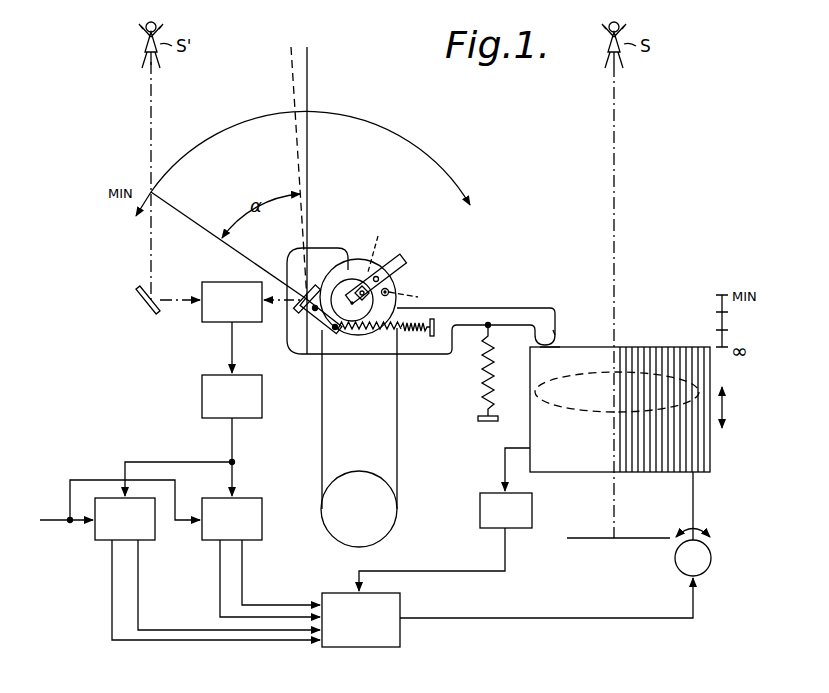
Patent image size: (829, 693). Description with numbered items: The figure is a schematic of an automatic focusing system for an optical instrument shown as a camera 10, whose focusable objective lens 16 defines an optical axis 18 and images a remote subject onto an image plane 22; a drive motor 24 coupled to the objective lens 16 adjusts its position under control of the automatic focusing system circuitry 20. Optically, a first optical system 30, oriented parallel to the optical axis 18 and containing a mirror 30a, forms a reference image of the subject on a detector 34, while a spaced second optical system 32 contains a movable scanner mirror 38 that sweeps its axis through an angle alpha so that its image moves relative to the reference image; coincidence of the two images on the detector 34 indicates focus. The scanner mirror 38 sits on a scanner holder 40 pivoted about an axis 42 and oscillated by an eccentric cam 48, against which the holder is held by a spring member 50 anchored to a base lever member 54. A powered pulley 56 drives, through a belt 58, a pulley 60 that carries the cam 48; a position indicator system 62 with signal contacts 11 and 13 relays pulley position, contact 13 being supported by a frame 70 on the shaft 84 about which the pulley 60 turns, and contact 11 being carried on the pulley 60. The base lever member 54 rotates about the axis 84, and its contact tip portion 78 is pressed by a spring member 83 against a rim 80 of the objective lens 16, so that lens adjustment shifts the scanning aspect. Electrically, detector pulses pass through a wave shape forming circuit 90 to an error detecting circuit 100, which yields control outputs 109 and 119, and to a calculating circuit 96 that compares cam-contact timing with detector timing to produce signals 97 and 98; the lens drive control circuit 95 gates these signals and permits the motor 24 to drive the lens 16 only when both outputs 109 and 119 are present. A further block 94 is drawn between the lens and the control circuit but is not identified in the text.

The camera 10 is at (532, 266).
The signal contact 11 is at (390, 291).
The signal contact 13 is at (381, 241).
The objective lens 16 is at (634, 345).
The optical axis 18 is at (617, 135).
The automatic focusing system circuitry 20 is at (185, 397).
The image plane 22 is at (605, 542).
The drive motor 24 is at (710, 558).
The first optical system 30 is at (148, 134).
The mirror 30a is at (140, 305).
The second optical system 32 is at (310, 95).
The detector 34 is at (232, 302).
The movable scanner mirror 38 is at (297, 310).
The scanner holder 40 is at (340, 340).
The pivot axis 42 is at (310, 325).
The cam 48 is at (360, 285).
The spring member 50 is at (422, 340).
The base lever member 54 is at (458, 308).
The powered pulley 56 is at (386, 524).
The belt 58 is at (398, 472).
The pulley 60 is at (328, 262).
The position indicator system 62 is at (398, 270).
The frame 70 is at (396, 263).
The contact tip portion 78 is at (556, 332).
The rim 80 is at (575, 347).
The spring member 83 is at (484, 384).
The shaft/axis 84 is at (415, 296).
The wave shape forming circuit 90 is at (232, 396).
The position sensor 94 is at (532, 518).
The lens drive control circuit 95 is at (400, 632).
The calculating circuit 96 is at (232, 519).
The input signal 97 is at (243, 573).
The input signal 98 is at (219, 569).
The error detecting circuit 100 is at (125, 519).
The control output 109 is at (140, 607).
The control output 119 is at (110, 610).